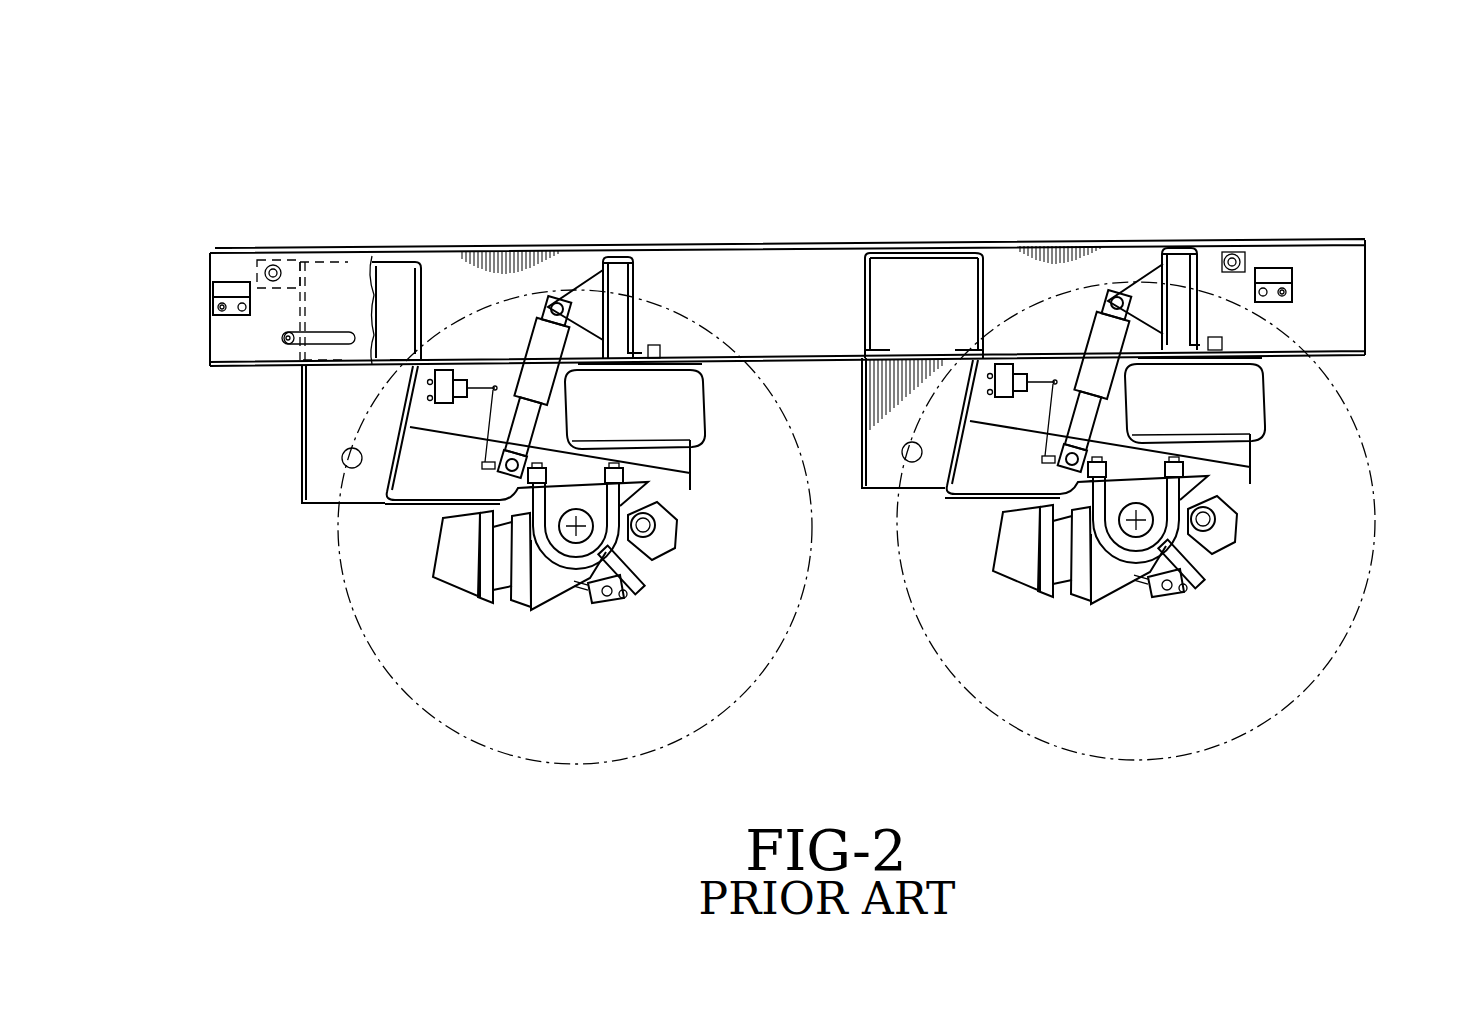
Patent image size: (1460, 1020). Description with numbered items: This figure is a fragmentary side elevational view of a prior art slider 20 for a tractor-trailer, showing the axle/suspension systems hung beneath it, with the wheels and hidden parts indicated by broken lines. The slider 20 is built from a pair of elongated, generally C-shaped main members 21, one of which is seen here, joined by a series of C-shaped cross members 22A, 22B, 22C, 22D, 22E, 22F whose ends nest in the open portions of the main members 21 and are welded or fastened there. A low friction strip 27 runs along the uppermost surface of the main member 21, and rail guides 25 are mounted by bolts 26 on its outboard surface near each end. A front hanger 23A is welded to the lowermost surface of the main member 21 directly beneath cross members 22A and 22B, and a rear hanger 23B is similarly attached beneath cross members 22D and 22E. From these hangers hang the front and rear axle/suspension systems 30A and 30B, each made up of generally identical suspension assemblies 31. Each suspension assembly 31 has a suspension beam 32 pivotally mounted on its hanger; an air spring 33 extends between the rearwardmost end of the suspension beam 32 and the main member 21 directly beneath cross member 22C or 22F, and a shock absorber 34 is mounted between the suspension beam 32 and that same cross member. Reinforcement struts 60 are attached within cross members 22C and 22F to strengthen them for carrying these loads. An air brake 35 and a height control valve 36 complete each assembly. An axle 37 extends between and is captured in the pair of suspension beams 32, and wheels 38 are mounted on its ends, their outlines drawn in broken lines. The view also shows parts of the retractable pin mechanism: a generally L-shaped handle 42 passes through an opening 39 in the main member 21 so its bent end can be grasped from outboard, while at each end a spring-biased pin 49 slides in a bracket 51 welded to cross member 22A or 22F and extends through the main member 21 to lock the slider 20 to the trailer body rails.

The slider 20 is at (735, 183).
The main member 21 is at (248, 373).
The cross member 22A is at (277, 322).
The cross member 22B is at (432, 293).
The cross member 22C is at (594, 253).
The cross member 22D is at (852, 283).
The cross member 22E is at (992, 281).
The cross member 22F is at (1150, 243).
The front hanger 23A is at (292, 472).
The rear hanger 23B is at (862, 497).
The rail guide 25 is at (228, 287).
The bolt 26 is at (222, 307).
The low friction strip 27 is at (224, 250).
The front axle/suspension system 30A is at (503, 615).
The rear axle/suspension system 30B is at (1063, 609).
The suspension assembly 31 is at (553, 585).
The suspension beam 32 is at (410, 500).
The air spring 33 is at (640, 402).
The shock absorber 34 is at (540, 363).
The air brake 35 is at (450, 568).
The height control valve 36 is at (447, 403).
The axle 37 is at (580, 527).
The wheel 38 is at (340, 575).
The opening 39 is at (286, 348).
The handle 42 is at (349, 346).
The pin 49 is at (275, 266).
The bracket 51 is at (300, 284).
The reinforcement strut 60 is at (618, 277).